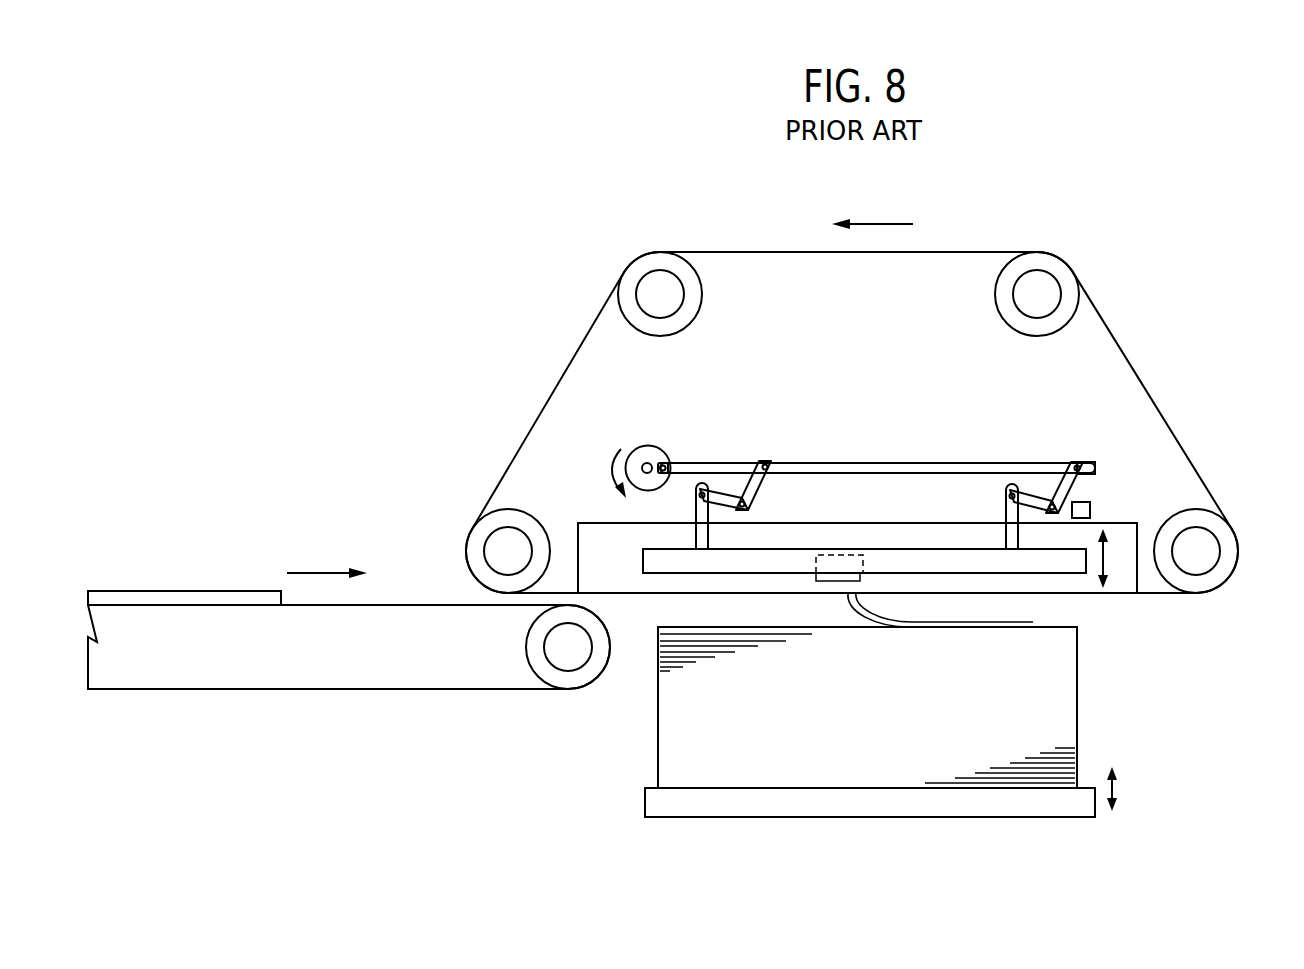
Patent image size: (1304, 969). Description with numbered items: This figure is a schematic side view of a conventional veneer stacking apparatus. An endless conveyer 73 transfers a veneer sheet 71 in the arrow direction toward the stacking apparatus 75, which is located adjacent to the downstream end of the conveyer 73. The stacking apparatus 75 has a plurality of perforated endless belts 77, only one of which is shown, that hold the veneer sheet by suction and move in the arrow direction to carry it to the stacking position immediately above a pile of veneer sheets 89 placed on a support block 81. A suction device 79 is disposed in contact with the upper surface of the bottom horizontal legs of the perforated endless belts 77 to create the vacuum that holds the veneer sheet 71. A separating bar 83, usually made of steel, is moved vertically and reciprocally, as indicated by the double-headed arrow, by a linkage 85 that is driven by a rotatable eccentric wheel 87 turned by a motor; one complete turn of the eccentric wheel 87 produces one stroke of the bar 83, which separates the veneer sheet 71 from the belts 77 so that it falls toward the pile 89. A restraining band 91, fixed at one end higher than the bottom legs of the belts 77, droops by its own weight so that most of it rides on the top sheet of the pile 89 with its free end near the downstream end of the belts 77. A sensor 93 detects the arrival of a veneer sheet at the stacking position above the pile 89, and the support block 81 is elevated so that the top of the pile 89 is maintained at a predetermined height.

The veneer sheet 71 is at (120, 597).
The endless conveyer 73 is at (369, 605).
The stacking apparatus 75 is at (527, 368).
The perforated endless belt 77 is at (1150, 595).
The suction device 79 is at (607, 540).
The support block 81 is at (873, 805).
The separating bar 83 is at (692, 560).
The linkage 85 is at (837, 461).
The eccentric wheel 87 is at (652, 452).
The pile of veneer sheets 89 is at (1013, 703).
The restraining band 91 is at (1033, 622).
The sensor 93 is at (1087, 511).